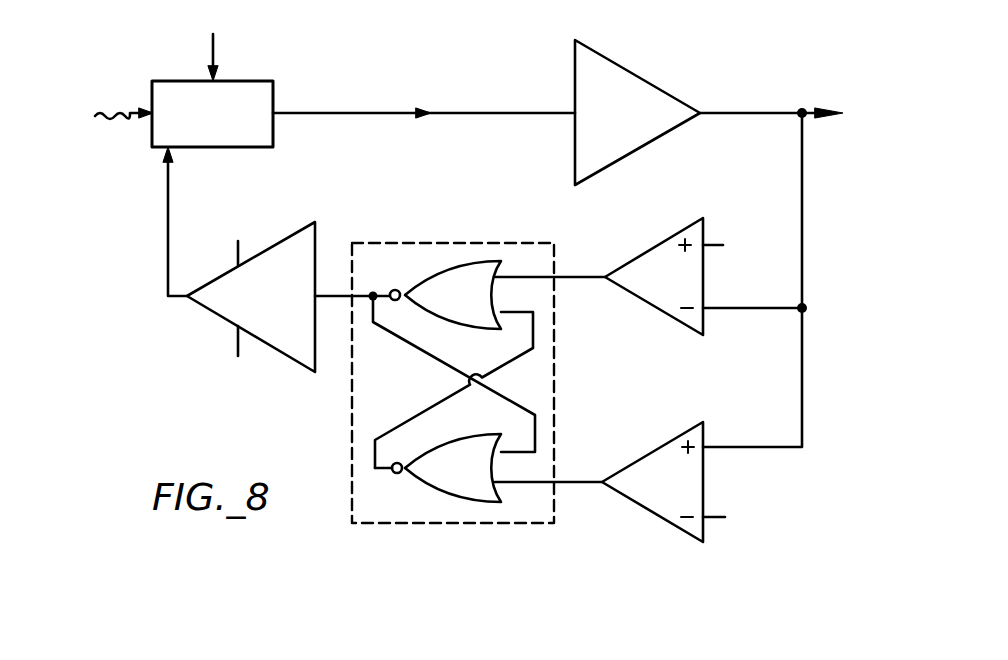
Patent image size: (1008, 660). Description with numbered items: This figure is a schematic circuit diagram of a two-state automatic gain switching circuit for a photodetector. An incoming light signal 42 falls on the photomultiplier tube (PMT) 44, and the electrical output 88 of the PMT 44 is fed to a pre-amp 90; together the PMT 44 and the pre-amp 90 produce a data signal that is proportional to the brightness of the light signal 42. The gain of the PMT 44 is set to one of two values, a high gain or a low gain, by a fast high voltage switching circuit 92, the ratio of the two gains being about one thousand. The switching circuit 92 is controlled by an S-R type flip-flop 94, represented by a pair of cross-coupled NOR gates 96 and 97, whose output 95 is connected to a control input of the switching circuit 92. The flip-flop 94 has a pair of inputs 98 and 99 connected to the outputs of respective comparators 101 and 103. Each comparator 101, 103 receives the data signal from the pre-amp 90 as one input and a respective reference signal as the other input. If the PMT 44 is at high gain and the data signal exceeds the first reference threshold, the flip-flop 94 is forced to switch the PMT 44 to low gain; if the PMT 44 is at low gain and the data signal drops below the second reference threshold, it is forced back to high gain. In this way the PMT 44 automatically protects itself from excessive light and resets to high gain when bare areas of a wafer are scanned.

The incoming light signal 42 is at (110, 112).
The photomultiplier tube (PMT) 44 is at (252, 81).
The electrical output of the PMT 88 is at (333, 113).
The pre-amp 90 is at (640, 78).
The high voltage switching circuit 92 is at (267, 344).
The S-R type flip-flop 94 is at (442, 243).
The flip-flop output 95 is at (334, 296).
The NOR gate 96 is at (425, 275).
The NOR gate 97 is at (420, 486).
The flip-flop input 98 is at (585, 277).
The flip-flop input 99 is at (578, 482).
The comparator 101 is at (675, 235).
The comparator 103 is at (630, 499).